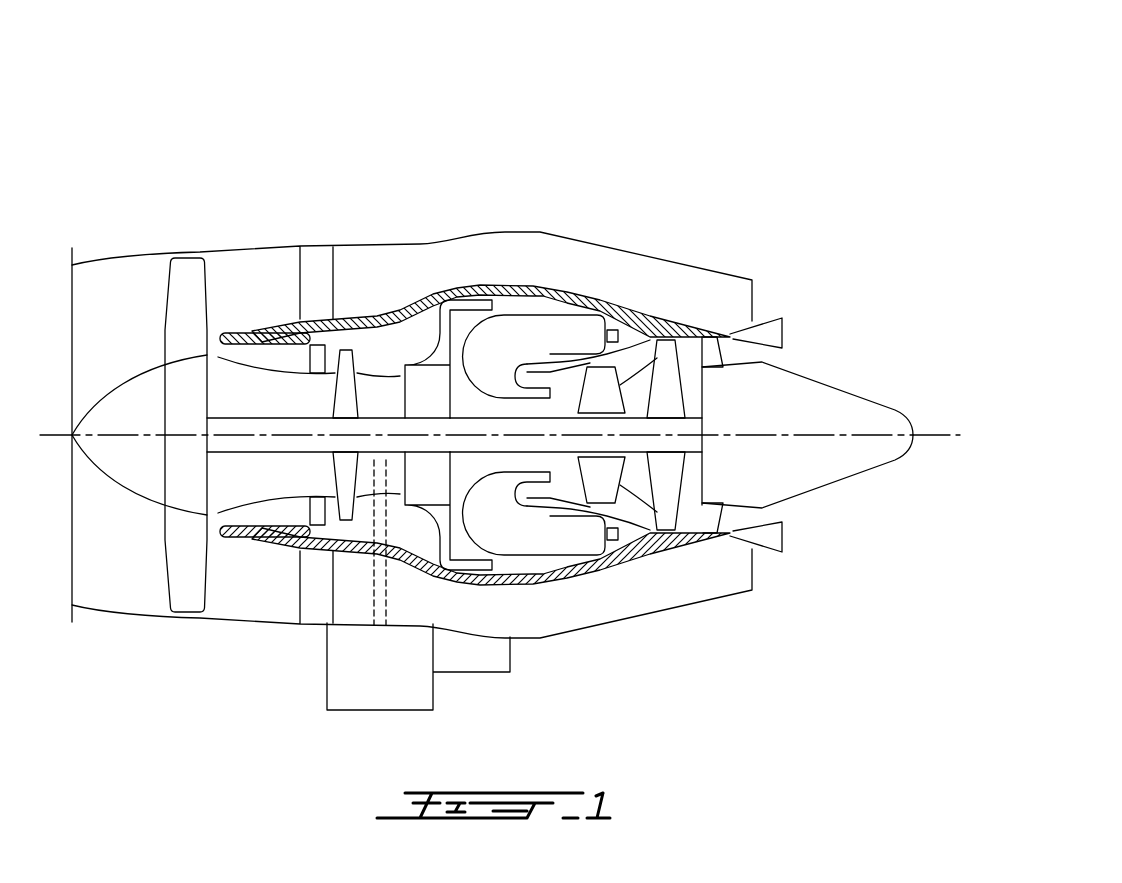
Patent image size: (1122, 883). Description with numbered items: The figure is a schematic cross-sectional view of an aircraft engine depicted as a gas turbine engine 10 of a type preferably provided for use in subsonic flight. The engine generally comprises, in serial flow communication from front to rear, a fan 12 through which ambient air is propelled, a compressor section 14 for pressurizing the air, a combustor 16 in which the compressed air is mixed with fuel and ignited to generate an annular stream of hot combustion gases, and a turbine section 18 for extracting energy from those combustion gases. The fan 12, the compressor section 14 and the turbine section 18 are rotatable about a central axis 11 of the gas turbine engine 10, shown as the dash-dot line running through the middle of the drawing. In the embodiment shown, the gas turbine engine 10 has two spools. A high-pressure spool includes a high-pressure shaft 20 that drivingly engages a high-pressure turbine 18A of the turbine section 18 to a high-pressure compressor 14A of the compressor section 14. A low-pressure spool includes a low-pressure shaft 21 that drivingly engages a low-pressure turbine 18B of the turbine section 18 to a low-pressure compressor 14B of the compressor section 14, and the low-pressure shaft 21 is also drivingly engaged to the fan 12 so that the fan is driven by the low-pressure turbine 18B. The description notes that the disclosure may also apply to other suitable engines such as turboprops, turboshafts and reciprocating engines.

The gas turbine engine 10 is at (673, 147).
The central axis 11 is at (942, 435).
The fan 12 is at (183, 550).
The compressor section 14 is at (372, 360).
The high-pressure compressor 14A is at (428, 495).
The low-pressure compressor 14B is at (343, 480).
The combustor 16 is at (535, 330).
The turbine section 18 is at (633, 485).
The high-pressure turbine 18A is at (603, 390).
The low-pressure turbine 18B is at (667, 367).
The high-pressure shaft 20 is at (473, 460).
The low-pressure shaft 21 is at (257, 418).